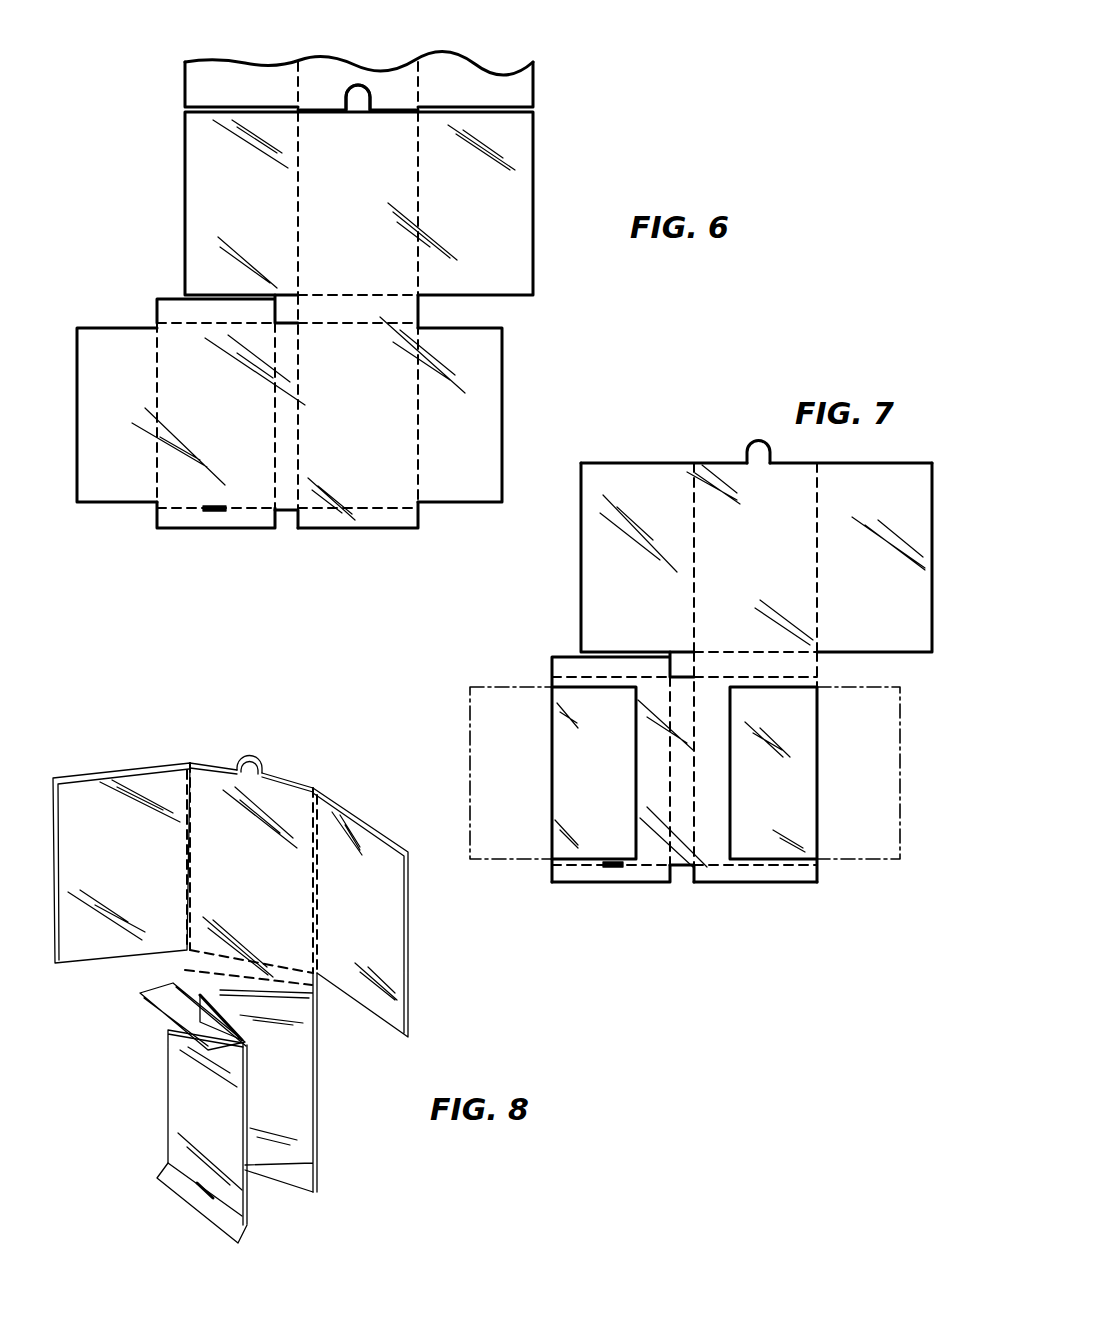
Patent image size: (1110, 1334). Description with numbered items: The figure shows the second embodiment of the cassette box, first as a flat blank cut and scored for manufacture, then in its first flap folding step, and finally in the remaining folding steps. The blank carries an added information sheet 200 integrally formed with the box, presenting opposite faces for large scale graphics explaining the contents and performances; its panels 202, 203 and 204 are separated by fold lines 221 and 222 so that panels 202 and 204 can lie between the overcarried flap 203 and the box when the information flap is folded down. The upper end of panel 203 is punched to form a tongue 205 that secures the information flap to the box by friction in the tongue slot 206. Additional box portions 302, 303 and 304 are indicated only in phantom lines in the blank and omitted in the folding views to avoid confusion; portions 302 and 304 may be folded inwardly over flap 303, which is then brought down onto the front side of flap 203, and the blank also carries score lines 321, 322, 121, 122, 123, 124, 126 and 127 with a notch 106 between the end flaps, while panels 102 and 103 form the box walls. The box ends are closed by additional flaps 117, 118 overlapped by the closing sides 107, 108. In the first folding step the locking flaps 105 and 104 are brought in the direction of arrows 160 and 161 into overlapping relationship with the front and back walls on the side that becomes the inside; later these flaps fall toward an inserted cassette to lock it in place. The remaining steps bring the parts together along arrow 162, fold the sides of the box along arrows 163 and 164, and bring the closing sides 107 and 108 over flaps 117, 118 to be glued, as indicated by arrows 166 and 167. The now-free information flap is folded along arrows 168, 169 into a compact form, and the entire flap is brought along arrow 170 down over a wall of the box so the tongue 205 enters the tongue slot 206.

In FIG. 6, the information sheet 200 is at (548, 152).
In FIG. 7, the information sheet 200 is at (906, 463).
In FIG. 6, the information flap panel 202 is at (241, 203).
In FIG. 7, the information flap panel 202 is at (637, 557).
In FIG. 8, the information flap panel 202 is at (118, 780).
In FIG. 6, the information flap panel 203 is at (377, 203).
In FIG. 7, the information flap panel 203 is at (752, 558).
In FIG. 8, the information flap panel 203 is at (273, 800).
In FIG. 6, the information flap panel 204 is at (475, 203).
In FIG. 7, the information flap panel 204 is at (874, 557).
In FIG. 8, the information flap panel 204 is at (376, 855).
In FIG. 6, the tongue 205 is at (358, 88).
In FIG. 7, the tongue 205 is at (760, 444).
In FIG. 8, the tongue 205 is at (253, 756).
In FIG. 6, the tongue slot 206 is at (215, 513).
In FIG. 7, the tongue slot 206 is at (610, 870).
In FIG. 8, the tongue slot 206 is at (207, 1189).
In FIG. 6, the fold line 221 is at (422, 189).
In FIG. 7, the fold line 221 is at (822, 516).
In FIG. 8, the fold line 221 is at (350, 803).
In FIG. 6, the fold line 222 is at (302, 186).
In FIG. 7, the fold line 222 is at (698, 524).
In FIG. 8, the fold line 222 is at (212, 762).
In FIG. 6, the box portion 302 is at (241, 84).
In FIG. 6, the flap 303 is at (392, 82).
In FIG. 6, the box portion 304 is at (475, 84).
In FIG. 6, the fold line 321 is at (428, 82).
In FIG. 6, the fold line 322 is at (303, 73).
In FIG. 6, the bottom panel 102 is at (231, 415).
In FIG. 7, the bottom panel 102 is at (652, 797).
In FIG. 8, the bottom panel 102 is at (182, 1135).
In FIG. 6, the bottom panel 103 is at (358, 473).
In FIG. 7, the bottom panel 103 is at (720, 820).
In FIG. 8, the bottom panel 103 is at (200, 987).
In FIG. 6, the locking flap 104 is at (441, 409).
In FIG. 7, the locking flap 104 is at (808, 830).
In FIG. 8, the locking flap 104 is at (290, 1058).
In FIG. 6, the locking flap 105 is at (151, 415).
In FIG. 7, the locking flap 105 is at (568, 795).
In FIG. 8, the locking flap 105 is at (203, 1000).
In FIG. 6, the notch 106 is at (288, 506).
In FIG. 7, the notch 106 is at (680, 867).
In FIG. 6, the closing side 107 is at (348, 530).
In FIG. 7, the closing side 107 is at (757, 882).
In FIG. 8, the closing side 107 is at (290, 1176).
In FIG. 6, the closing side 108 is at (402, 312).
In FIG. 7, the closing side 108 is at (812, 667).
In FIG. 8, the closing side 108 is at (287, 982).
In FIG. 6, the additional flap 117 is at (168, 531).
In FIG. 7, the additional flap 117 is at (570, 878).
In FIG. 8, the additional flap 117 is at (223, 1230).
In FIG. 6, the additional flap 118 is at (178, 306).
In FIG. 7, the additional flap 118 is at (562, 660).
In FIG. 8, the additional flap 118 is at (150, 1005).
In FIG. 6, the fold line 121 is at (418, 480).
In FIG. 7, the fold line 121 is at (820, 792).
In FIG. 8, the fold line 121 is at (320, 1113).
In FIG. 6, the fold line 122 is at (302, 418).
In FIG. 7, the fold line 122 is at (700, 796).
In FIG. 7, the fold line 123 is at (657, 862).
In FIG. 6, the fold line 124 is at (157, 470).
In FIG. 7, the fold line 124 is at (556, 837).
In FIG. 8, the fold line 124 is at (249, 1102).
In FIG. 6, the fold line 126 is at (334, 326).
In FIG. 6, the fold line 127 is at (395, 510).
In FIG. 7, the fold line 127 is at (800, 868).
In FIG. 7, the arrow 160 is at (585, 766).
In FIG. 7, the arrow 161 is at (775, 765).
In FIG. 8, the arrow 162 is at (160, 1065).
In FIG. 8, the arrow 163 is at (148, 972).
In FIG. 8, the arrow 164 is at (248, 1237).
In FIG. 8, the arrow 166 is at (178, 972).
In FIG. 8, the arrow 167 is at (290, 1210).
In FIG. 8, the arrow 168 is at (152, 890).
In FIG. 8, the arrow 169 is at (285, 918).
In FIG. 8, the arrow 170 is at (247, 777).